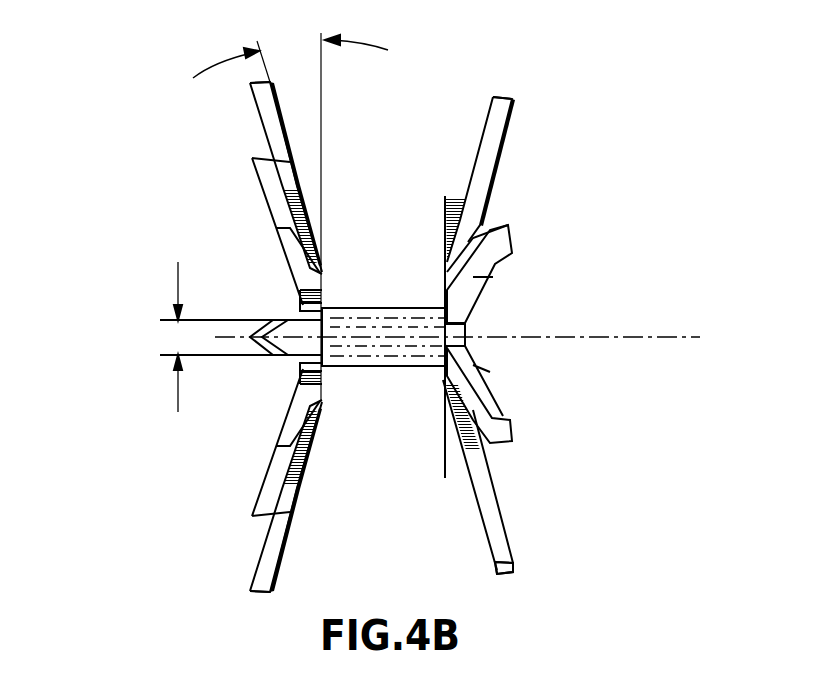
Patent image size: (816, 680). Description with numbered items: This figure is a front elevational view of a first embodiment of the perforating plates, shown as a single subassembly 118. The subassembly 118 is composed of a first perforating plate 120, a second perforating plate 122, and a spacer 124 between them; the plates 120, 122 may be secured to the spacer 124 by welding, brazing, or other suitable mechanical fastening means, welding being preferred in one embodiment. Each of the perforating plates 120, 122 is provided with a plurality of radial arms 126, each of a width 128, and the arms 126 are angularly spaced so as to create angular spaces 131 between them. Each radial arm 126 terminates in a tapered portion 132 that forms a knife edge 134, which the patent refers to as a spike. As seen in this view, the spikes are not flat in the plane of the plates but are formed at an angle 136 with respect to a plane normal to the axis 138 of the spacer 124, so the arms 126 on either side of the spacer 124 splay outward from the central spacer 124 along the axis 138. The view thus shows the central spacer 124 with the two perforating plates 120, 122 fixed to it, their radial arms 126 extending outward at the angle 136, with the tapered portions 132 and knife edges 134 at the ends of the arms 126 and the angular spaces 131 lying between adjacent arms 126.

The subassembly 118 is at (606, 124).
The first perforating plate 120 is at (262, 117).
The second perforating plate 122 is at (480, 183).
The spacer 124 is at (378, 306).
The radial arm 126 is at (512, 258).
The width 128 is at (230, 337).
The angular space 131 is at (290, 303).
The tapered portion 132 is at (268, 182).
The knife edge 134 is at (500, 98).
The angle 136 is at (290, 49).
The axis 138 is at (535, 337).